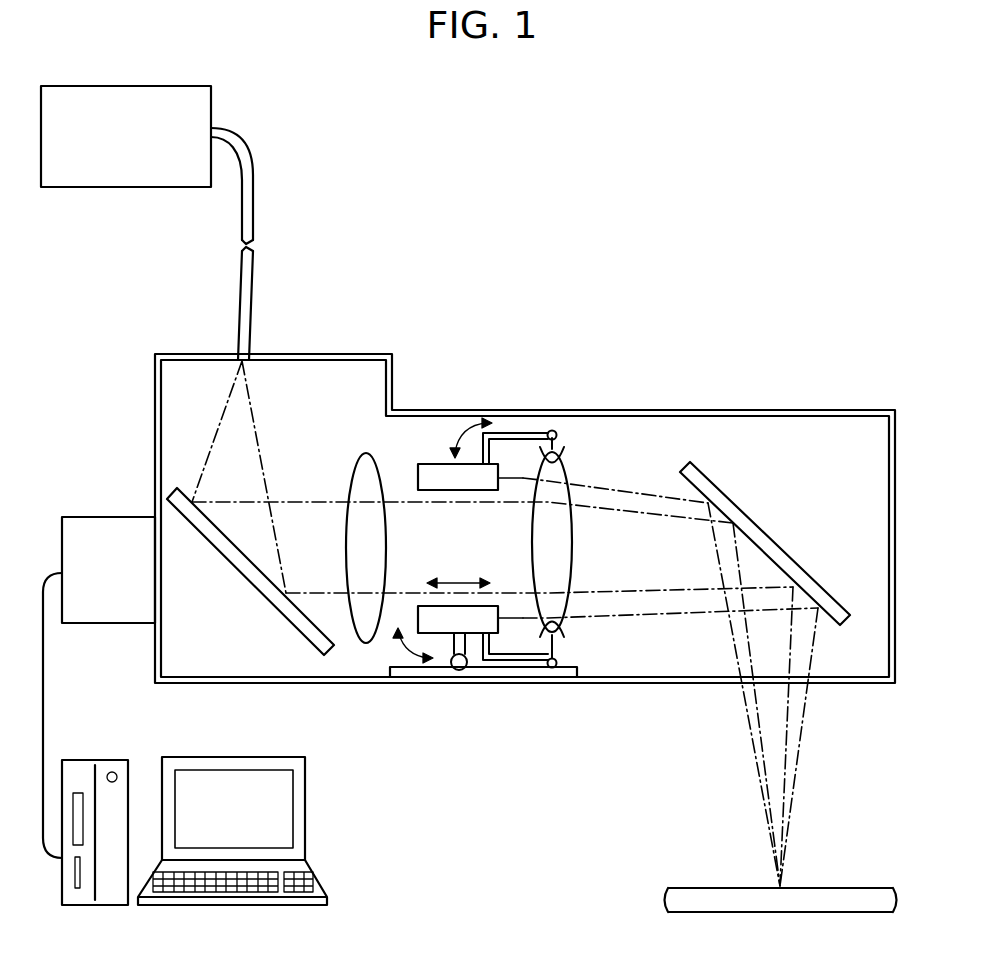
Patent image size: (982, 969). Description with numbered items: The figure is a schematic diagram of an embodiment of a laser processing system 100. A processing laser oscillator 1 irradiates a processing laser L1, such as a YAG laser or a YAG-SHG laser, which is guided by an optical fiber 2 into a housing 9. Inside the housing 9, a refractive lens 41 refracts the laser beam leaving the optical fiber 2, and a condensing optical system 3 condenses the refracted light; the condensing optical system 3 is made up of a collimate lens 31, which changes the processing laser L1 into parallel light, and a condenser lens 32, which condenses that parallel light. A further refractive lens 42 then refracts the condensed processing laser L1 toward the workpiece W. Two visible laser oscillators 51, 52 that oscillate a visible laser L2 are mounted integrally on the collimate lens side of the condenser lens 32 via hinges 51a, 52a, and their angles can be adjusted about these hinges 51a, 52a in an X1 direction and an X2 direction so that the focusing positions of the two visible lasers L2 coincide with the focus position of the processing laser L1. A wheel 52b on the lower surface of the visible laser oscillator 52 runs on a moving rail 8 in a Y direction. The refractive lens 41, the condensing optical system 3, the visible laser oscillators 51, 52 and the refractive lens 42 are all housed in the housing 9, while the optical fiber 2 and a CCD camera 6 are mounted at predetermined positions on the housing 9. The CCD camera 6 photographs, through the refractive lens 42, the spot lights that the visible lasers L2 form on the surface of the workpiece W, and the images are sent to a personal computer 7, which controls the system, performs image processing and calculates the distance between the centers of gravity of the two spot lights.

The laser processing system 100 is at (598, 222).
The processing laser oscillator 1 is at (130, 188).
The optical fiber 2 is at (255, 268).
The condensing optical system 3 is at (352, 311).
The collimate lens 31 is at (367, 453).
The condenser lens 32 is at (566, 458).
The refractive lens 41 is at (300, 632).
The refractive lens 42 is at (690, 462).
The visible laser oscillator 51 is at (430, 464).
The hinge 51a is at (562, 467).
The visible laser oscillator 52 is at (474, 640).
The hinge 52a is at (552, 669).
The wheel 52b is at (460, 671).
The CCD camera 6 is at (108, 626).
The personal computer 7 is at (305, 808).
The moving rail 8 is at (404, 667).
The housing 9 is at (790, 410).
The processing laser L1 is at (257, 447).
The visible laser L2 is at (603, 482).
The workpiece W is at (668, 898).
The X1 direction X1 is at (457, 422).
The X2 direction X2 is at (418, 668).
The Y direction Y is at (458, 571).